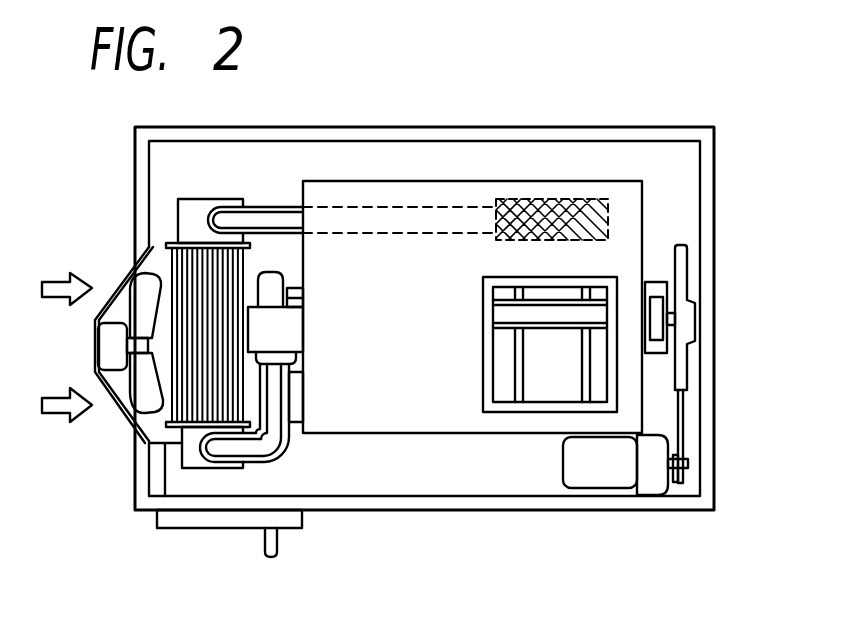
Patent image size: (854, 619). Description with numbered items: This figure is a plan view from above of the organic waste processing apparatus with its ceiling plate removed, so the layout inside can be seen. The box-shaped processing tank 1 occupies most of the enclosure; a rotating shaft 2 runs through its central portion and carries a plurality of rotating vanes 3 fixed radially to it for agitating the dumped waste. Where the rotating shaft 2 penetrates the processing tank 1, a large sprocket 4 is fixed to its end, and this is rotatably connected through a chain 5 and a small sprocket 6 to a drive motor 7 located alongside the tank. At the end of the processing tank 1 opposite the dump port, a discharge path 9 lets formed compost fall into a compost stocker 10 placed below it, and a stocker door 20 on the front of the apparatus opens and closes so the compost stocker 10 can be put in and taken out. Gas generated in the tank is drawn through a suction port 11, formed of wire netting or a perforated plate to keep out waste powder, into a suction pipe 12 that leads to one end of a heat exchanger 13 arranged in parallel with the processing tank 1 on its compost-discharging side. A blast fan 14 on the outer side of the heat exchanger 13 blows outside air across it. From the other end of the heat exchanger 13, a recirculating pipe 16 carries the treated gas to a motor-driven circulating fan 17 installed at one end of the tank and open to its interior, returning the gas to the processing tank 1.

The processing tank 1 is at (416, 420).
The rotating shaft 2 is at (552, 318).
The rotating vanes 3 is at (525, 393).
The large sprocket 4 is at (688, 323).
The chain 5 is at (680, 417).
The small sprocket 6 is at (683, 463).
The drive motor 7 is at (605, 473).
The discharge path 9 is at (295, 395).
The compost stocker 10 is at (222, 485).
The suction port 11 is at (544, 203).
The suction pipe 12 is at (428, 205).
The heat exchanger 13 is at (203, 260).
The blast fan 14 is at (133, 293).
The recirculating pipe 16 is at (271, 453).
The circulating fan 17 is at (288, 333).
The stocker door 20 is at (177, 530).